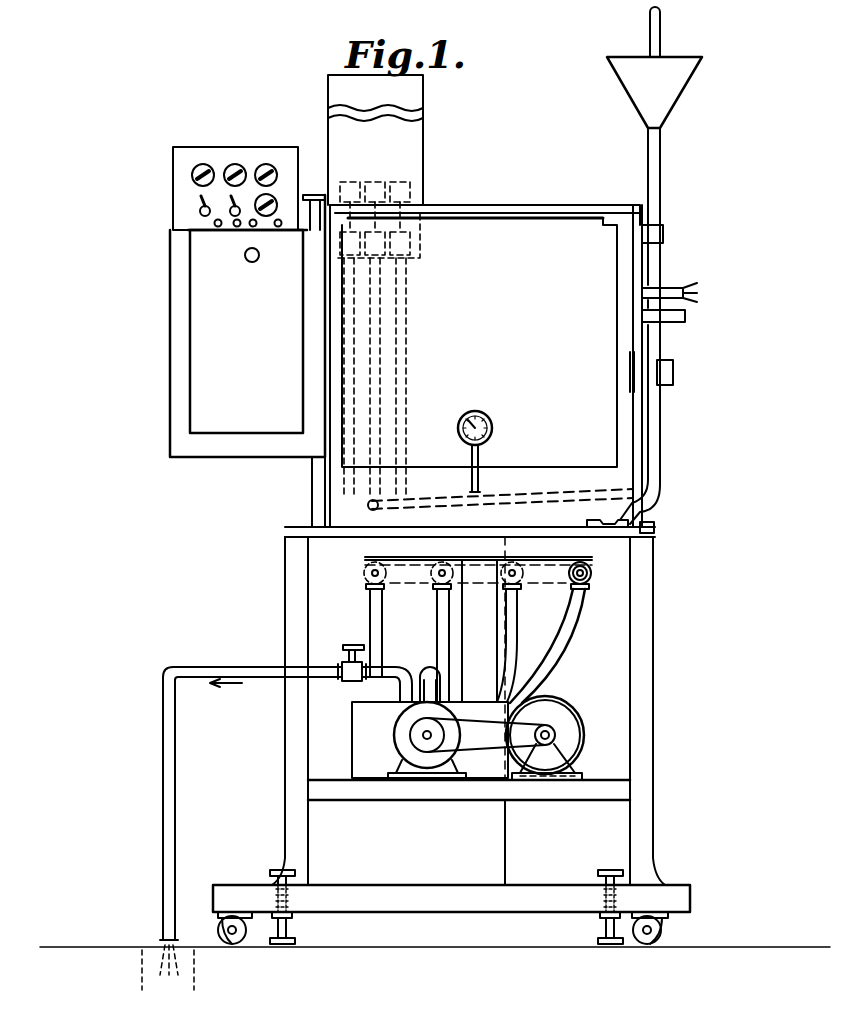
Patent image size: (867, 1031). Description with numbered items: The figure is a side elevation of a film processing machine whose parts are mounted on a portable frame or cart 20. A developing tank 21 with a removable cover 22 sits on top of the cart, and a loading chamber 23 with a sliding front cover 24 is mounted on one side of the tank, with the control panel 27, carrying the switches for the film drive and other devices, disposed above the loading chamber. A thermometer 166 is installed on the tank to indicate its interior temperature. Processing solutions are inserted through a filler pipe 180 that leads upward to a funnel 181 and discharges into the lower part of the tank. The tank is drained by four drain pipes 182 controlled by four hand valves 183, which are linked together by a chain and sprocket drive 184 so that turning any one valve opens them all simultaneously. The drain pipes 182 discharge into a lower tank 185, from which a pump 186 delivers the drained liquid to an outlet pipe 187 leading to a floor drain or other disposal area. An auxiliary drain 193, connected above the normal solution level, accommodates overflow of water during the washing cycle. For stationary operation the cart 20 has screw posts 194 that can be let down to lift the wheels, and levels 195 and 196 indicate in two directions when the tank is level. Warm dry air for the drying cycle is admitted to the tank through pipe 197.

The portable frame or cart 20 is at (646, 641).
The developing tank 21 is at (500, 467).
The removable cover 22 is at (515, 207).
The loading chamber 23 is at (172, 384).
The sliding front cover 24 is at (208, 306).
The control panel 27 is at (237, 157).
The thermometer 166 is at (487, 420).
The filler pipe 180 is at (658, 180).
The funnel 181 is at (672, 90).
The drain pipes 182 is at (440, 609).
The hand valves 183 is at (410, 584).
The chain and sprocket drive 184 is at (484, 553).
The tank 185 is at (490, 833).
The pump 186 is at (422, 735).
The outlet pipe 187 is at (170, 796).
The auxiliary drain 193 is at (480, 643).
The screw posts 194 is at (290, 876).
The level 195 is at (640, 521).
The level 196 is at (656, 530).
The pipe 197 is at (675, 378).